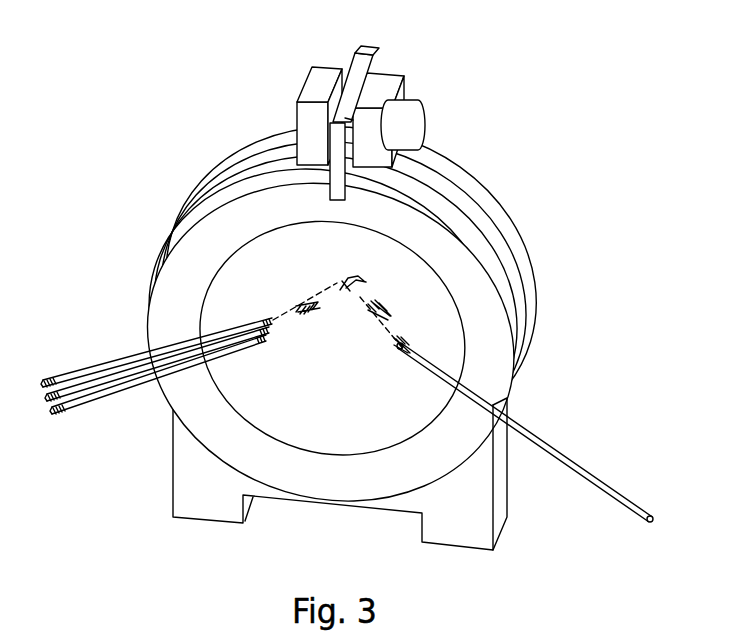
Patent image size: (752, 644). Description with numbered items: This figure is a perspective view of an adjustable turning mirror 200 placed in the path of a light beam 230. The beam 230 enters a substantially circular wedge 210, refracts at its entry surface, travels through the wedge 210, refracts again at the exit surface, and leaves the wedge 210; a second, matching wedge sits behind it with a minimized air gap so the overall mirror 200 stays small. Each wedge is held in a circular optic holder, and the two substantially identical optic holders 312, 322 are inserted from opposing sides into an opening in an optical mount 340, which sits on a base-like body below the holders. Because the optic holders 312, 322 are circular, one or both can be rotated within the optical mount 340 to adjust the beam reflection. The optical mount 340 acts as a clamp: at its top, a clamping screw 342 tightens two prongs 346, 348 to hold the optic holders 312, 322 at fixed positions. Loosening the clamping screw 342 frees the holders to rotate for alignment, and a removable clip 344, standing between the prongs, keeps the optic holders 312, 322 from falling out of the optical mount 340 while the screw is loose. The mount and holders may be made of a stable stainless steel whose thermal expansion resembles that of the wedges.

The mirror 200 is at (177, 115).
The wedge 210 is at (345, 366).
The light beam 230 is at (590, 473).
The optic holder 312 is at (335, 342).
The optic holder 322 is at (344, 298).
The optical mount 340 is at (503, 494).
The clamping screw 342 is at (438, 113).
The removable clip 344 is at (381, 103).
The prong 346 is at (298, 96).
The prong 348 is at (404, 100).